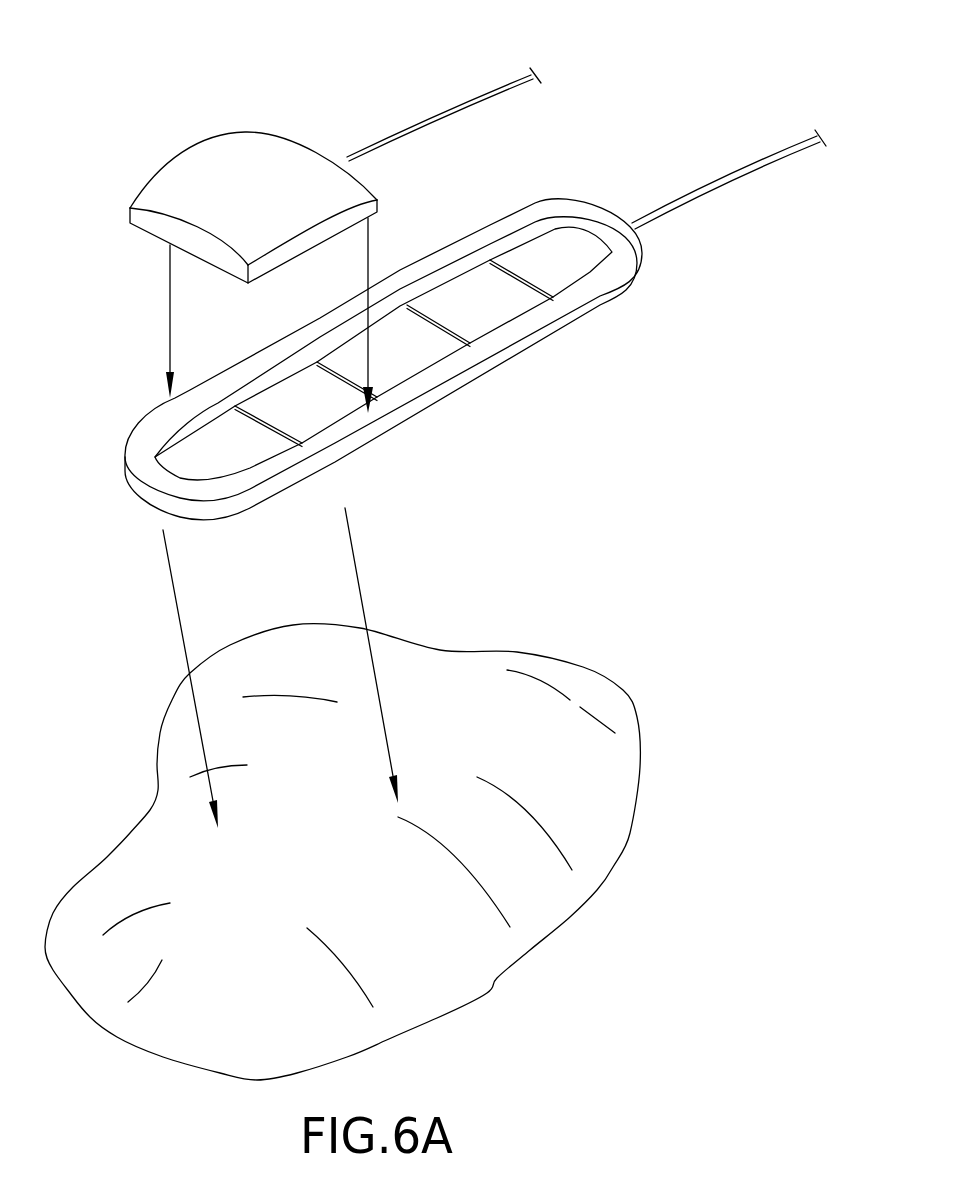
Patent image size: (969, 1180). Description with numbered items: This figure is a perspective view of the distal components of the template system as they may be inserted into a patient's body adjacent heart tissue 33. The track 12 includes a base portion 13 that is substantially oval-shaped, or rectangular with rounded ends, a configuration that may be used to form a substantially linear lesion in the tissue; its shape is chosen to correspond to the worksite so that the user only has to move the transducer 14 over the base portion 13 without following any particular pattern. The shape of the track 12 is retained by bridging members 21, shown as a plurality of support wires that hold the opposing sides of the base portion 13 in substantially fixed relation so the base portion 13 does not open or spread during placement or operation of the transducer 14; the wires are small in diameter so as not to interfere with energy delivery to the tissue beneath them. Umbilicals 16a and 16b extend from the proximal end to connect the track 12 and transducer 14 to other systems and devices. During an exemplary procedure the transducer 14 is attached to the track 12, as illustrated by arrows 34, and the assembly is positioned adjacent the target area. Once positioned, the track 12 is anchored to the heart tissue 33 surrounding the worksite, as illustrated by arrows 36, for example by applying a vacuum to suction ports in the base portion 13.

The track 12 is at (403, 374).
The base portion 13 is at (613, 300).
The transducer 14 is at (284, 128).
The umbilical 16a is at (757, 163).
The umbilical 16b is at (500, 87).
The bridging member 21 is at (330, 369).
The heart tissue 33 is at (637, 718).
The arrows 34 is at (368, 288).
The arrows 36 is at (355, 570).